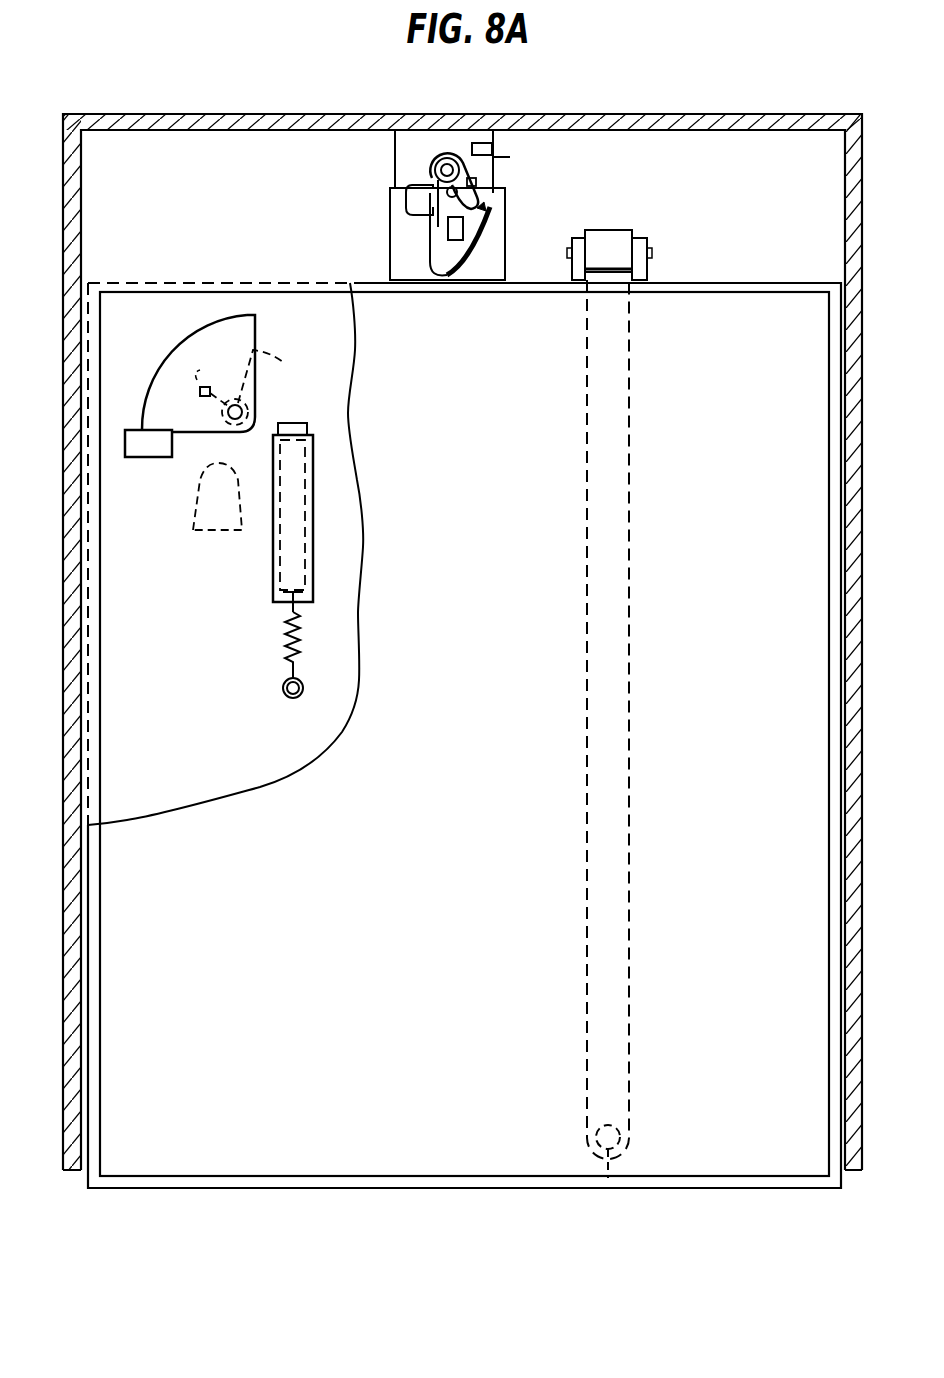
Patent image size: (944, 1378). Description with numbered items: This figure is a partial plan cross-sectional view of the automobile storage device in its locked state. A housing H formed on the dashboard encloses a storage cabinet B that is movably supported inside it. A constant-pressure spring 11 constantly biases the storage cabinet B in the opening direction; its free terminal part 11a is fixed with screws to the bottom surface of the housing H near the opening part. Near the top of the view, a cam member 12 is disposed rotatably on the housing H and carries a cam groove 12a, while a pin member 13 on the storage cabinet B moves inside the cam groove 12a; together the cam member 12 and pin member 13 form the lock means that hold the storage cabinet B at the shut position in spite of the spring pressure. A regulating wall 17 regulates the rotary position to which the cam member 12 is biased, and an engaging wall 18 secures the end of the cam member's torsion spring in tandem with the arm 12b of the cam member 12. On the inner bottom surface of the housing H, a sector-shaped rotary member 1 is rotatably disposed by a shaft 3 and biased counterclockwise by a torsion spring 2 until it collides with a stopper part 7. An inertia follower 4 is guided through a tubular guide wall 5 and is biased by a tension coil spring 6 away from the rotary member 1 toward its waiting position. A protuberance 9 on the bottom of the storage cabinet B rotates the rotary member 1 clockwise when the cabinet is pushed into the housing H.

The sector-shaped rotary member 1 is at (197, 347).
The torsion spring 2 is at (283, 362).
The shaft 3 is at (228, 422).
The inertia follower 4 is at (292, 422).
The tubular guide wall 5 is at (290, 533).
The tension coil spring 6 is at (300, 624).
The stopper part 7 is at (145, 443).
The protuberance 9 is at (207, 517).
The constant-pressure spring 11 is at (602, 243).
The free terminal part 11a is at (612, 1192).
The cam member 12 is at (455, 253).
The cam groove 12a is at (484, 205).
The arm 12b is at (422, 197).
The pin member 13 is at (435, 188).
The regulating wall 17 is at (476, 182).
The engaging wall 18 is at (482, 142).
The housing H is at (763, 112).
The storage cabinet B is at (694, 1178).